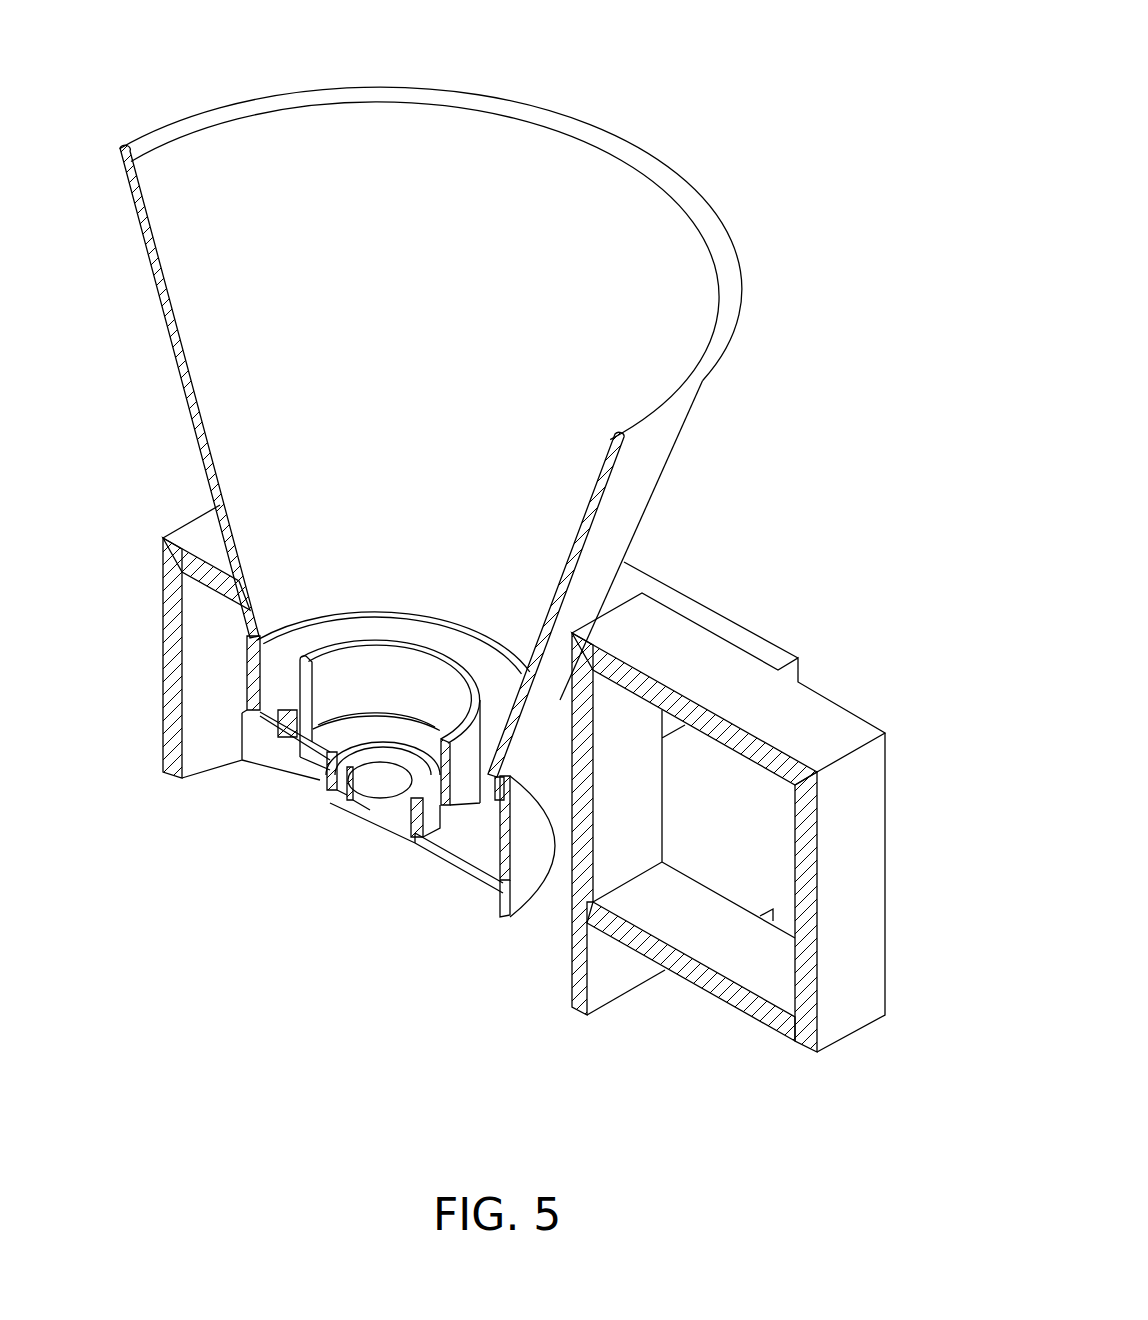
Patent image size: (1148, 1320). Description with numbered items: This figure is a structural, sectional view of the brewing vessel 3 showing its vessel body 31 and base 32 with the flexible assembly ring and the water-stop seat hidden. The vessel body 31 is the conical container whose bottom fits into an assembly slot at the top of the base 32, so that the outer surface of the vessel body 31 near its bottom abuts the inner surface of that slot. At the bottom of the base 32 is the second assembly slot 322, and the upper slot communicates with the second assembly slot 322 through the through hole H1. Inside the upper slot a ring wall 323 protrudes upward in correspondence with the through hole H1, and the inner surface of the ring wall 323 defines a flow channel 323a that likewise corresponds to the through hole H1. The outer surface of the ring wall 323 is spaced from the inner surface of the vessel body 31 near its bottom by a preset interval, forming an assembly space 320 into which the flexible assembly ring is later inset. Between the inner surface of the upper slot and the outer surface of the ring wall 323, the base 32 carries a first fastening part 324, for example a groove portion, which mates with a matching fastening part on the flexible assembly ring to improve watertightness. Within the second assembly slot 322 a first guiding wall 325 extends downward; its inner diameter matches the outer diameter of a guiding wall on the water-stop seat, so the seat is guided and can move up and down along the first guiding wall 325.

The brewing vessel 3 is at (770, 52).
The vessel body 31 is at (762, 276).
The base 32 is at (805, 624).
The assembly space 320 is at (293, 624).
The second assembly slot 322 is at (465, 896).
The ring wall 323 is at (432, 686).
The flow channel 323a is at (378, 682).
The first fastening part 324 is at (270, 755).
The first guiding wall 325 is at (528, 895).
The through hole H1 is at (372, 795).